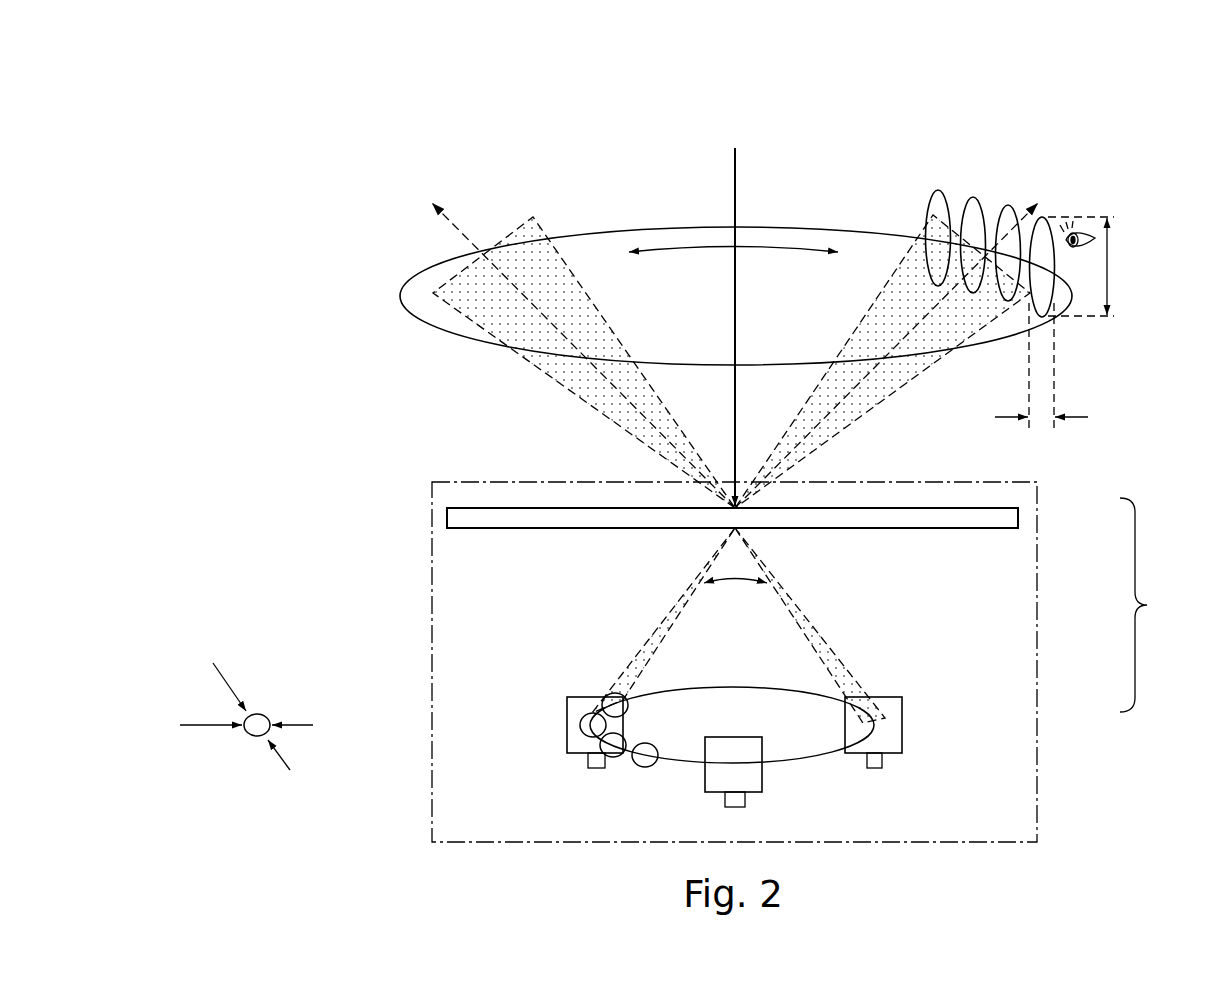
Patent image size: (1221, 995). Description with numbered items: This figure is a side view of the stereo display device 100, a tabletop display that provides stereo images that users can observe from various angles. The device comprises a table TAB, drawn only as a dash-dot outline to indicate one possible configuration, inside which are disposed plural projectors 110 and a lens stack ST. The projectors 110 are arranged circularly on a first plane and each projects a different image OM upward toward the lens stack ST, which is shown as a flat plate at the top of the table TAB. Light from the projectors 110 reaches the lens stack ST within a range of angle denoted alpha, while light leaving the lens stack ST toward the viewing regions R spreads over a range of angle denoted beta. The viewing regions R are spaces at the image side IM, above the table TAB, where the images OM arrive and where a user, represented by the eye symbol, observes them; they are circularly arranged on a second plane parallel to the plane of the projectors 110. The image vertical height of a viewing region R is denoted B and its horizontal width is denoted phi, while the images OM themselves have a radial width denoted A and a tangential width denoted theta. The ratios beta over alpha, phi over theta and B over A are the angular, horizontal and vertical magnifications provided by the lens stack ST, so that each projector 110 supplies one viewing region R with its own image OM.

The image side IM is at (845, 111).
The viewing regions R is at (940, 190).
The image vertical height B is at (1094, 266).
The radial width of the images A is at (233, 739).
The images OM is at (645, 768).
The lens stack ST is at (1015, 521).
The table TAB is at (1037, 600).
The stereo display device 100 is at (1158, 605).
The projectors 110 is at (893, 715).